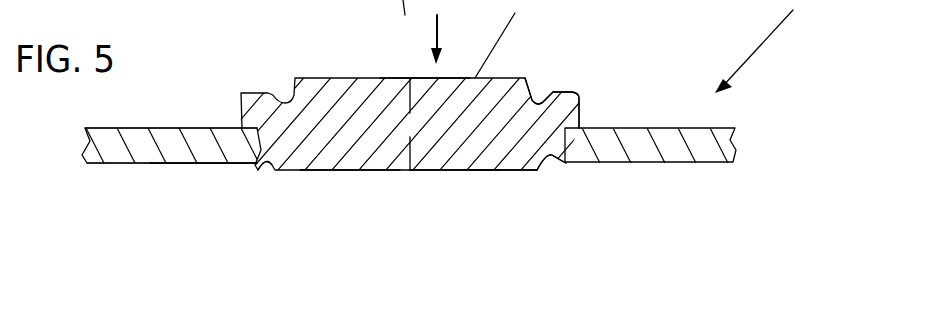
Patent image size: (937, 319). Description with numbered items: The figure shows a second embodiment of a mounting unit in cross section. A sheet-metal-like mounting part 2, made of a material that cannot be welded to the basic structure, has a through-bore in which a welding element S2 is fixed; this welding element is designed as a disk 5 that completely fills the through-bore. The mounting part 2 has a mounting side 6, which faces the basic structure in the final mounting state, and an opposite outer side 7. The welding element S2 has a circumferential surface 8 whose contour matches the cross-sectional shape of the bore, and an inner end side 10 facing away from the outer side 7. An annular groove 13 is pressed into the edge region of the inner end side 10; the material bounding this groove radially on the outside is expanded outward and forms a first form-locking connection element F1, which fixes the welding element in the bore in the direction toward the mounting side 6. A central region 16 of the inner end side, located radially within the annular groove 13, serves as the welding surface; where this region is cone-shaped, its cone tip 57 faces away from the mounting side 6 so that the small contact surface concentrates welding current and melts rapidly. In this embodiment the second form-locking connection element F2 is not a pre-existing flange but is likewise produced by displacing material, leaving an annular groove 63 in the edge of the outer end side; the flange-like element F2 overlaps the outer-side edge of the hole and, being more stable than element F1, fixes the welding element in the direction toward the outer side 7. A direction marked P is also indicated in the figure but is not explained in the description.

The mounting part 2 is at (157, 140).
The disk 5 is at (330, 117).
The mounting side 6 is at (174, 163).
The outer side 7 is at (175, 128).
The circumferential surface 8 is at (565, 140).
The inner end side 10 is at (346, 172).
The annular groove 13 is at (270, 171).
The central region 16 is at (426, 172).
The cone tip 57 is at (424, 53).
The annular groove 63 is at (539, 97).
The first form-locking connection element F1 is at (565, 163).
The second form-locking connection element F2 is at (564, 112).
The welding element S2 is at (501, 141).
The pressing direction P is at (440, 36).